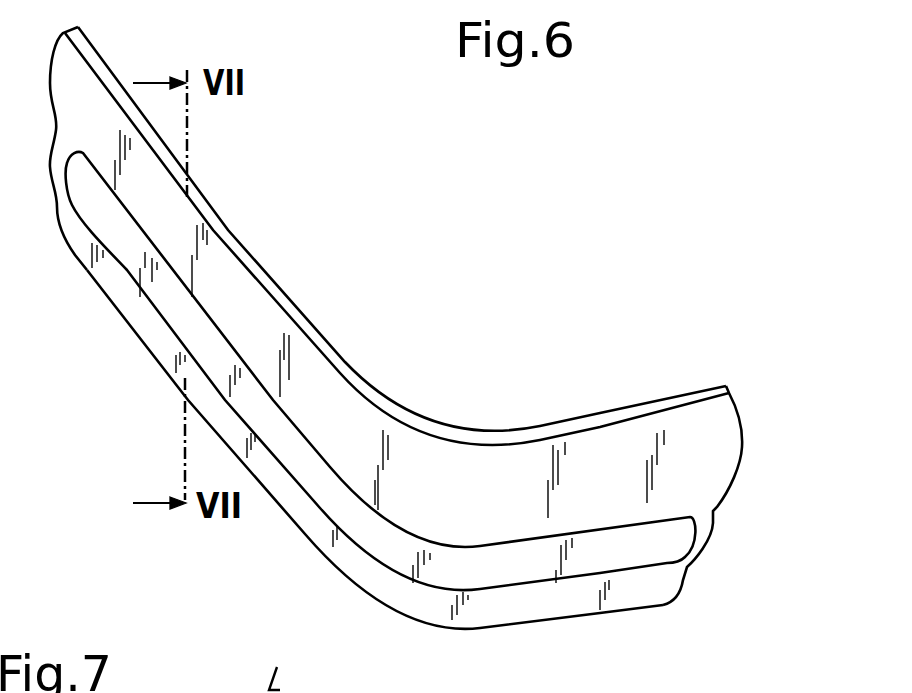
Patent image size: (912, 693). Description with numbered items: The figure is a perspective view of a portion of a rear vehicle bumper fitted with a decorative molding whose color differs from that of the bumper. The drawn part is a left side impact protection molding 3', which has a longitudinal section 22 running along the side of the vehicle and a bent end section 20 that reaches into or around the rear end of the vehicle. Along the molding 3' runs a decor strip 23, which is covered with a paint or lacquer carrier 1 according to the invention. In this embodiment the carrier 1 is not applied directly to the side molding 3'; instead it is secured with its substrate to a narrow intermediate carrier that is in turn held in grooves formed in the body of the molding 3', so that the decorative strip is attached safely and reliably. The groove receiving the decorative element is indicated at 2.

The carrier 1 is at (307, 478).
The longitudinal groove 2 is at (520, 543).
The left side impact protection molding 3' is at (402, 229).
The bent end section 20 is at (710, 446).
The longitudinal section 22 is at (100, 130).
The decor strip 23 is at (618, 552).